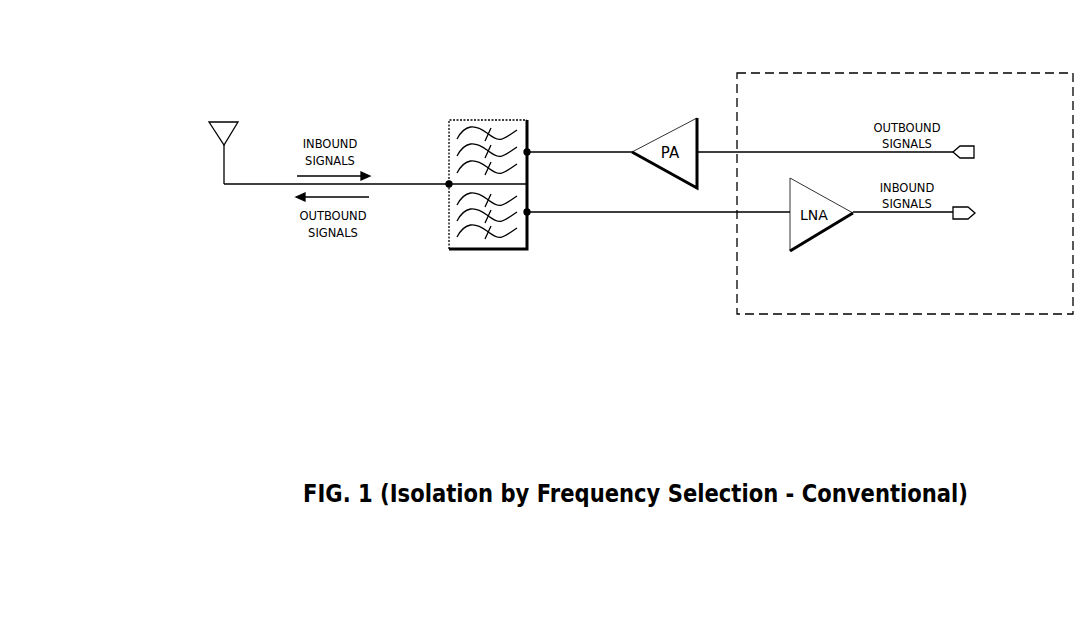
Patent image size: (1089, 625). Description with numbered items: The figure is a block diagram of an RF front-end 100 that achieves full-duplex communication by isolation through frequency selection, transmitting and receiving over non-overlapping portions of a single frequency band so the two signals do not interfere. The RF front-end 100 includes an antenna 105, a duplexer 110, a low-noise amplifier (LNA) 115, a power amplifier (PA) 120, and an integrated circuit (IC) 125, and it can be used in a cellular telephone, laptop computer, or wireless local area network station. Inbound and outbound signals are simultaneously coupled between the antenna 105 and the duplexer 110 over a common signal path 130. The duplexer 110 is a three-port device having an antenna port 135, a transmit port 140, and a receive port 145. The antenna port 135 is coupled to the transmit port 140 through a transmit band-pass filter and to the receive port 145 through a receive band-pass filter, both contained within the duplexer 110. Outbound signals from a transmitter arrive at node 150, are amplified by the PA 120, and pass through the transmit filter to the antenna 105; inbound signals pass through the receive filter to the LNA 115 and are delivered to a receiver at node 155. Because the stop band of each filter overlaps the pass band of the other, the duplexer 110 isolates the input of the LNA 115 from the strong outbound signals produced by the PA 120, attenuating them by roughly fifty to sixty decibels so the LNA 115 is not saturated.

The RF front-end 100 is at (316, 382).
The antenna 105 is at (237, 133).
The duplexer 110 is at (492, 118).
The low-noise amplifier (LNA) 115 is at (826, 233).
The power amplifier (PA) 120 is at (670, 130).
The integrated-circuit (IC) 125 is at (922, 72).
The common signal path 130 is at (243, 186).
The antenna port 135 is at (447, 187).
The transmit port 140 is at (530, 150).
The receive port 145 is at (530, 215).
The node 150 is at (977, 152).
The node 155 is at (977, 213).